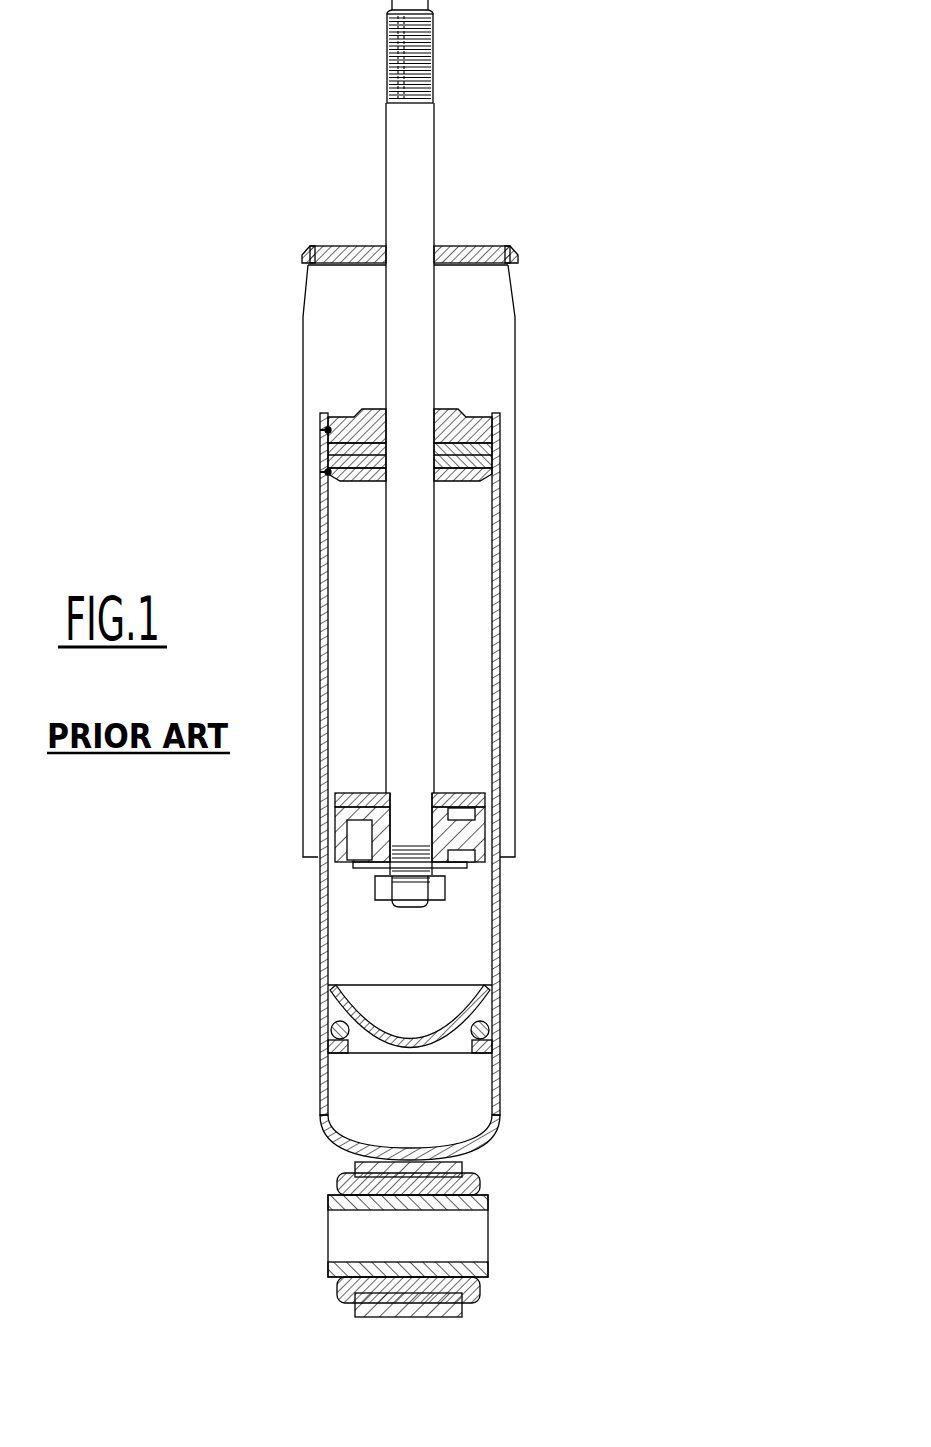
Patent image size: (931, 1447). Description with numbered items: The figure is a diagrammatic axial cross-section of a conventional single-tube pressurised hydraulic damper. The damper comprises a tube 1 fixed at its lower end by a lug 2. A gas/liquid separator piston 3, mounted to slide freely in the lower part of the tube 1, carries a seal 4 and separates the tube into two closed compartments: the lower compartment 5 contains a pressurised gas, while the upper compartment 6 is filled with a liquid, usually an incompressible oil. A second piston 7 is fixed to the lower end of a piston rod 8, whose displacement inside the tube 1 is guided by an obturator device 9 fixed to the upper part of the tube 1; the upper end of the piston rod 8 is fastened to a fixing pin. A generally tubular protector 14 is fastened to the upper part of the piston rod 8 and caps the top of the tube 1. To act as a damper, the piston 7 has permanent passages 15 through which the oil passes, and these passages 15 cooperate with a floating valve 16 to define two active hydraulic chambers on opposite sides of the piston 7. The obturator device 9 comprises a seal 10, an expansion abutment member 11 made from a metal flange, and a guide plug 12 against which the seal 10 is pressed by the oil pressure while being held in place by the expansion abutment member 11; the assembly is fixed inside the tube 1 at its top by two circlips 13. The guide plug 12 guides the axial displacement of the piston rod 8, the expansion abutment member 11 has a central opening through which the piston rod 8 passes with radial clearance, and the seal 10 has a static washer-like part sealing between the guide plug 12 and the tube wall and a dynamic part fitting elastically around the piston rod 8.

The tube 1 is at (496, 569).
The lug 2 is at (510, 1222).
The gas/liquid separator piston 3 is at (426, 1001).
The seal 4 is at (486, 1032).
The lower compartment 5 is at (430, 1093).
The upper compartment 6 is at (393, 945).
The second piston 7 is at (409, 854).
The piston rod 8 is at (415, 668).
The obturator device 9 is at (488, 437).
The seal 10 is at (490, 466).
The expansion abutment member 11 is at (484, 480).
The guide plug 12 is at (474, 456).
The circlips 13 is at (328, 472).
The protector 14 is at (517, 323).
The permanent passages 15 is at (330, 848).
The floating valve 16 is at (350, 818).